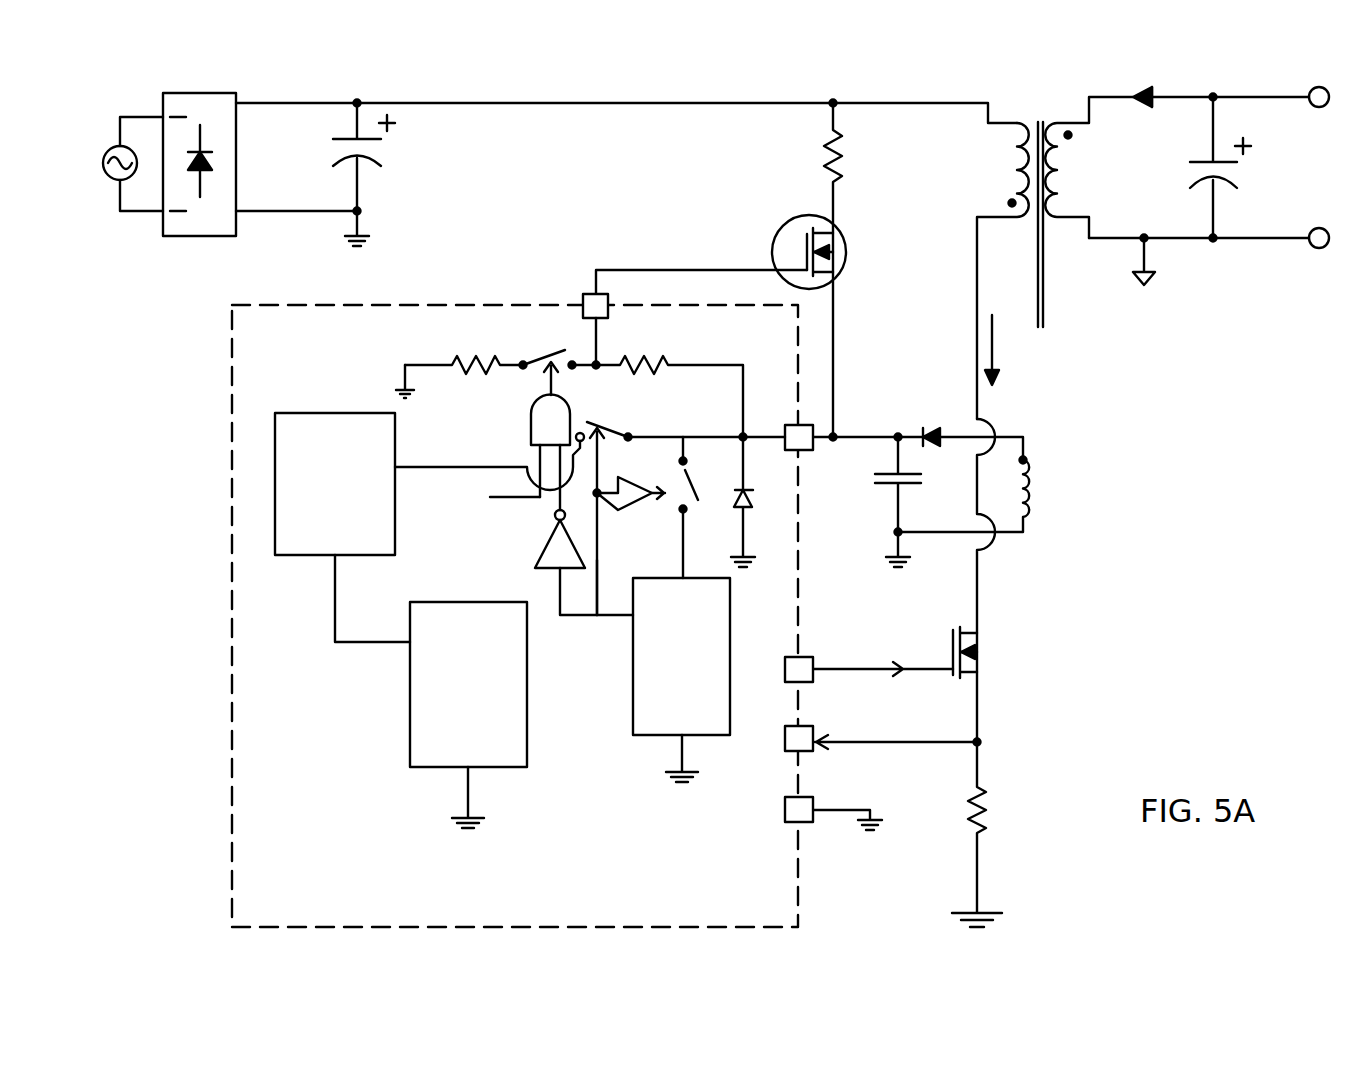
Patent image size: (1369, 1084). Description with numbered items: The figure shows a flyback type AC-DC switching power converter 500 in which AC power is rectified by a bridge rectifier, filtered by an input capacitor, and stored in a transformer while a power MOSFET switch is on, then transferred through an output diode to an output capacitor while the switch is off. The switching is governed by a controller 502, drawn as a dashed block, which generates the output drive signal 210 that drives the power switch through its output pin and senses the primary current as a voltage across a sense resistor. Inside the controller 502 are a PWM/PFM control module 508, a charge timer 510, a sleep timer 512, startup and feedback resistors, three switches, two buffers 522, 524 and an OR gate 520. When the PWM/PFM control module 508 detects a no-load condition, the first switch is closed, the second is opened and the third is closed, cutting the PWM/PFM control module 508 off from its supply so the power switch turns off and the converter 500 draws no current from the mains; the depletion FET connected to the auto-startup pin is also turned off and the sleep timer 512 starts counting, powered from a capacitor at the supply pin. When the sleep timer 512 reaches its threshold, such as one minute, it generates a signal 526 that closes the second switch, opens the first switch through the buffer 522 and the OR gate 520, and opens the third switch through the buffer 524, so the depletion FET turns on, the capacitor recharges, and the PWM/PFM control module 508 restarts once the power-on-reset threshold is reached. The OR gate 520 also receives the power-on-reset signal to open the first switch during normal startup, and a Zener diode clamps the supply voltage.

The power converter 500 is at (1077, 558).
The controller 502 is at (522, 610).
The PWM/PFM control module 508 is at (335, 484).
The charge timer 510 is at (468, 715).
The sleep timer 512 is at (681, 680).
The OR gate 520 is at (531, 437).
The buffer 522 is at (542, 555).
The buffer 524 is at (634, 507).
The signal 526 is at (597, 588).
The output drive signal 210 is at (843, 669).